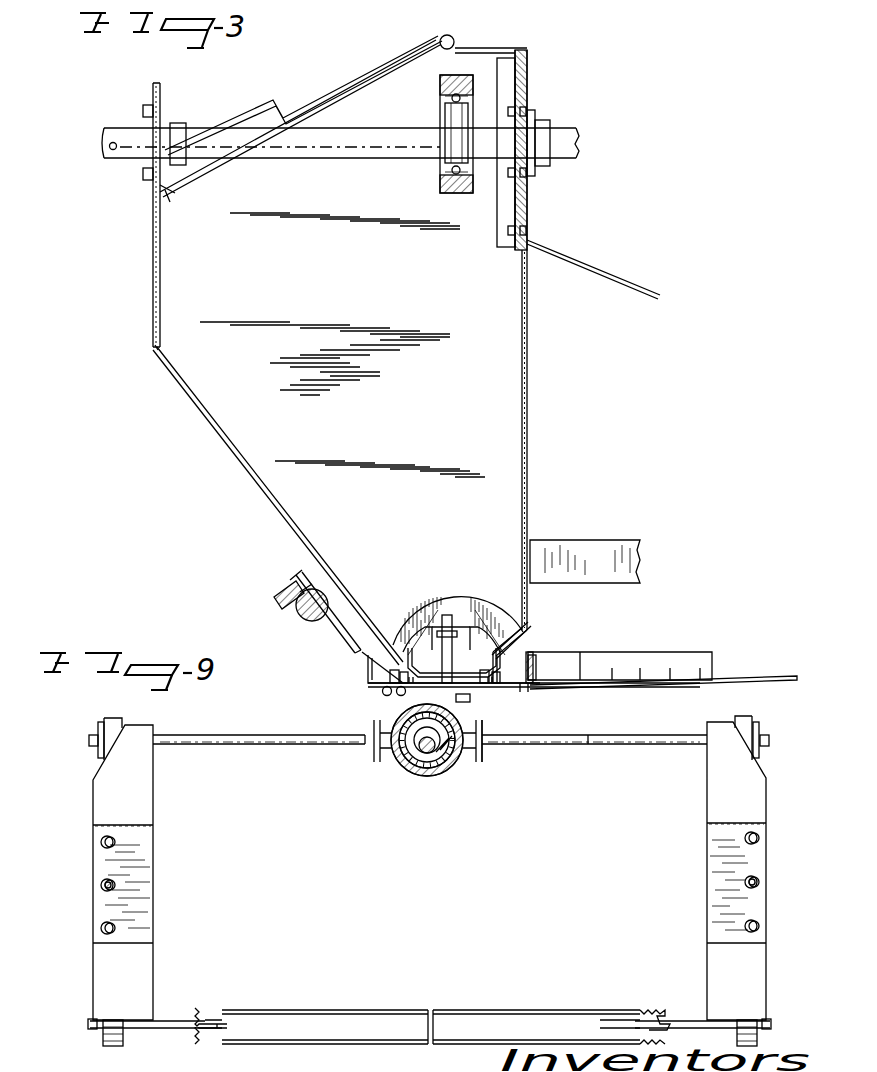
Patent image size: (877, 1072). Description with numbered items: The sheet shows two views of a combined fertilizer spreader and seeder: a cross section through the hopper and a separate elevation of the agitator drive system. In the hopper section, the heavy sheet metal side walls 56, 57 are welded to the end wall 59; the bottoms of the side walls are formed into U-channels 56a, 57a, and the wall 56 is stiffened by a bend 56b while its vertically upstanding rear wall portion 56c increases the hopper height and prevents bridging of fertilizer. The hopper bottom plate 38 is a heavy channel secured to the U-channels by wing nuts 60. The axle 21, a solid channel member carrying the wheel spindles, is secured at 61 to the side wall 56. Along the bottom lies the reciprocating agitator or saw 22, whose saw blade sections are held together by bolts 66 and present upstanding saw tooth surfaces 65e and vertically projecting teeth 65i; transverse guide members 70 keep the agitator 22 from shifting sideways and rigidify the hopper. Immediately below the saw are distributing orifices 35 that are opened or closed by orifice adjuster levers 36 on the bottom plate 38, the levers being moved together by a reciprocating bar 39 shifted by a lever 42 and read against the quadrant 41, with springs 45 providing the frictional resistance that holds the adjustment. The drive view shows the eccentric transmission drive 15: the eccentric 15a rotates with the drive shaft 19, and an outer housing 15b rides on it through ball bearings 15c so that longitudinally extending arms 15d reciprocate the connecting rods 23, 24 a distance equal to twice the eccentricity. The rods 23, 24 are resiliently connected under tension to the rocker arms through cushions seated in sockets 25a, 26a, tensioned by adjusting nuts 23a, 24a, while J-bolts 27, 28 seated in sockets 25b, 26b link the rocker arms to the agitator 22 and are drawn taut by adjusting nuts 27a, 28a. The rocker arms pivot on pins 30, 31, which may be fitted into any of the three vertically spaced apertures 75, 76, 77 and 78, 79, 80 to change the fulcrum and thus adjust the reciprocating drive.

In FIG. 3, the eccentric transmission drive 15 is at (424, 172).
In FIG. 3, the eccentric 15a is at (455, 125).
In FIG. 9, the eccentric 15a is at (452, 756).
In FIG. 3, the outer housing 15b is at (442, 200).
In FIG. 9, the outer housing 15b is at (400, 764).
In FIG. 3, the ball bearings 15c is at (472, 82).
In FIG. 9, the ball bearings 15c is at (440, 776).
In FIG. 3, the longitudinally extending arms 15d is at (396, 691).
In FIG. 3, the drive shaft 19 is at (372, 142).
In FIG. 9, the drive shaft 19 is at (420, 768).
In FIG. 3, the axle 21 is at (292, 592).
In FIG. 3, the reciprocating agitator 22 is at (425, 652).
In FIG. 9, the reciprocating agitator 22 is at (214, 1003).
In FIG. 9, the connecting rod 23 is at (280, 737).
In FIG. 9, the tension adjusting nut 23a is at (90, 740).
In FIG. 9, the connecting rod 24 is at (580, 736).
In FIG. 9, the tension adjusting nut 24a is at (765, 735).
In FIG. 9, the socket 25a is at (118, 718).
In FIG. 9, the socket 25b is at (115, 1047).
In FIG. 9, the socket 26a is at (746, 716).
In FIG. 9, the socket 26b is at (740, 1046).
In FIG. 9, the J-bolt 27 is at (168, 1020).
In FIG. 9, the adjusting nut 27a is at (94, 1030).
In FIG. 9, the J-bolt 28 is at (676, 1020).
In FIG. 9, the adjusting nut 28a is at (768, 1028).
In FIG. 9, the pivot pin 30 is at (112, 884).
In FIG. 9, the pivot pin 31 is at (748, 878).
In FIG. 9, the distributing orifices 35 is at (418, 750).
In FIG. 9, the orifice adjuster levers 36 is at (590, 740).
In FIG. 3, the bottom plate 38 is at (370, 676).
In FIG. 3, the reciprocating bar 39 is at (535, 686).
In FIG. 3, the quadrant 41 is at (710, 652).
In FIG. 3, the lever 42 is at (754, 676).
In FIG. 3, the springs 45 is at (458, 696).
In FIG. 3, the side wall 56 is at (210, 428).
In FIG. 3, the U-channel 56a is at (380, 655).
In FIG. 3, the bend 56b is at (157, 350).
In FIG. 3, the vertically upstanding rear wall portion 56c is at (160, 262).
In FIG. 3, the side wall 57 is at (528, 332).
In FIG. 3, the U-channel 57a is at (508, 657).
In FIG. 3, the end wall 59 is at (400, 290).
In FIG. 3, the wing nuts 60 is at (382, 690).
In FIG. 9, the wing nuts 60 is at (502, 700).
In FIG. 3, the securing point 61 is at (342, 578).
In FIG. 3, the upstanding saw tooth surface 65e is at (512, 652).
In FIG. 3, the vertically projecting teeth 65i is at (475, 626).
In FIG. 3, the bolts 66 is at (462, 598).
In FIG. 3, the transverse guide members 70 is at (412, 607).
In FIG. 9, the aperture 75 is at (113, 928).
In FIG. 9, the aperture 76 is at (100, 885).
In FIG. 9, the aperture 77 is at (100, 837).
In FIG. 9, the aperture 78 is at (745, 926).
In FIG. 9, the aperture 79 is at (745, 885).
In FIG. 9, the aperture 80 is at (758, 838).